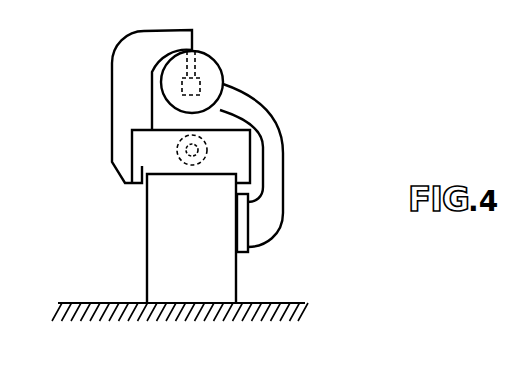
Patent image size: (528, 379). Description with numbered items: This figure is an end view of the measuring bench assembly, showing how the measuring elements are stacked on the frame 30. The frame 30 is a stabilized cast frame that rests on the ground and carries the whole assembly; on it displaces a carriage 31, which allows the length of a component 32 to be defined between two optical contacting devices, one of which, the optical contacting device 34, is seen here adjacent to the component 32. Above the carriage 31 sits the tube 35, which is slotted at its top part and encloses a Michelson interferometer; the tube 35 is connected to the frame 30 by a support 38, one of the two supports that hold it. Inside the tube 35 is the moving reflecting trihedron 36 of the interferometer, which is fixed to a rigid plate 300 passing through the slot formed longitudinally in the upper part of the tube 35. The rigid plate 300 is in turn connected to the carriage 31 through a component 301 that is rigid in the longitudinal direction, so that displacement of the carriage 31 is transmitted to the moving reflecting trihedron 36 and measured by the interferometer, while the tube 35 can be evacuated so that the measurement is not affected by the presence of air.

The frame 30 is at (237, 271).
The carriage 31 is at (140, 184).
The component 301 is at (160, 37).
The rigid plate 300 is at (195, 63).
The tube 35 is at (216, 70).
The moving reflecting trihedron 36 is at (201, 86).
The support 38 is at (280, 163).
The component 32 is at (187, 160).
The optical contacting device 34 is at (193, 155).